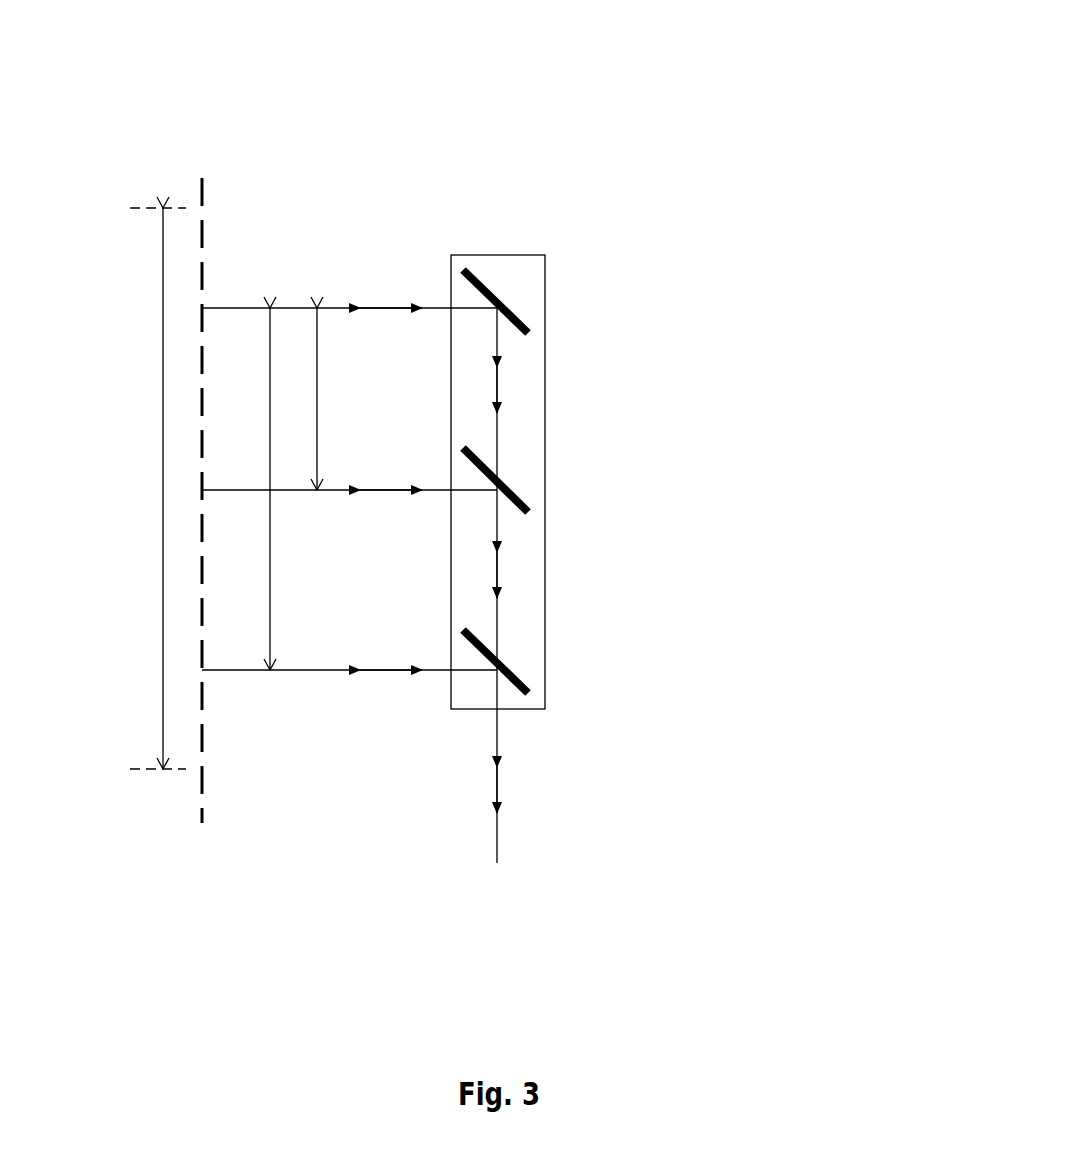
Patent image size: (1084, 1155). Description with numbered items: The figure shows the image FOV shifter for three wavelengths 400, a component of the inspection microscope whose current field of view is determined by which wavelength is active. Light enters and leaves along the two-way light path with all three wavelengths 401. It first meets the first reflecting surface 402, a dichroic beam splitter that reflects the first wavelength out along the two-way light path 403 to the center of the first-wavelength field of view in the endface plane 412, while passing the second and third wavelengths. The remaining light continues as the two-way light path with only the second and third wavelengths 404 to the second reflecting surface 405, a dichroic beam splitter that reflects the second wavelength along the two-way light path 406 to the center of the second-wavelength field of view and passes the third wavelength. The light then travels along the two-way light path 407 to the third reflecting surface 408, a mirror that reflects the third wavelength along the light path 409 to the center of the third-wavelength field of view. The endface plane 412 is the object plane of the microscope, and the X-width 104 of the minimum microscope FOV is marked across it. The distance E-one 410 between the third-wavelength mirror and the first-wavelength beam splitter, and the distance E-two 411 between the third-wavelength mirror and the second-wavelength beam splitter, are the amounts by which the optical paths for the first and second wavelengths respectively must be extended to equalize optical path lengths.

The X-width of minimum microscope FOV 104 is at (157, 502).
The image FOV shifter for three wavelengths 400 is at (592, 210).
The two-way light path with all three wavelengths 401 is at (503, 788).
The first reflecting surface, dichroic beam splitter 402 is at (517, 665).
The two-way light path to center of FOV for λ1 403 is at (392, 683).
The two-way light path with only λ2 and λ3 404 is at (512, 573).
The second reflecting surface, dichroic beam splitter 405 is at (512, 478).
The two-way light path to center of FOV for λ2 406 is at (392, 497).
The two-way light path with λ3 407 is at (512, 387).
The third reflecting surface, dichroic mirror 408 is at (512, 295).
The light path to center of FOV for λ3 409 is at (392, 315).
The E1 distance 410 is at (270, 290).
The E2 distance 411 is at (315, 290).
The endface plane 412 is at (203, 835).